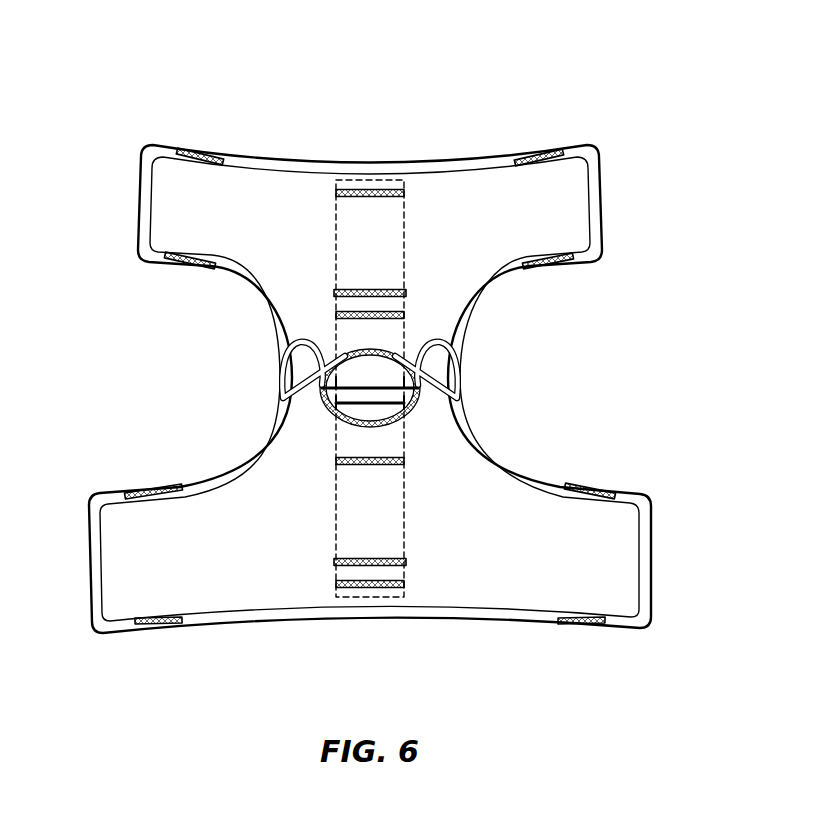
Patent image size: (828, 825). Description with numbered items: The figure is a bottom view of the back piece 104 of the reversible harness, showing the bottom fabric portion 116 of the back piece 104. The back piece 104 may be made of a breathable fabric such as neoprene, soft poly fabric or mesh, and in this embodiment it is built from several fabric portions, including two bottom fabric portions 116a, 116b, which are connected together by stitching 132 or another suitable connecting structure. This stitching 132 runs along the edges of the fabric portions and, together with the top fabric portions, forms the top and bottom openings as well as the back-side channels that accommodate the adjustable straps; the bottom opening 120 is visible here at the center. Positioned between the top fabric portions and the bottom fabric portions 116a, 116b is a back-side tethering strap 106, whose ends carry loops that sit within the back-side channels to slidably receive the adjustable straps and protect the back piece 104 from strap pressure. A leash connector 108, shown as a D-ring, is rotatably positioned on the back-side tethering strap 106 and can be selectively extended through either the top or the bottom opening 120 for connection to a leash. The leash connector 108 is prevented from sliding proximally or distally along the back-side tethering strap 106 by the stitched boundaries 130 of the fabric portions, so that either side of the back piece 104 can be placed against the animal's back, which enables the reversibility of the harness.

The back piece 104 is at (505, 83).
The back-side tethering strap 106 is at (386, 370).
The leash connector 108 is at (386, 396).
The bottom fabric portions 116 is at (242, 582).
The bottom fabric portion 116a is at (445, 267).
The bottom fabric portion 116b is at (470, 490).
The bottom opening 120 is at (328, 386).
The stitched boundaries 130 is at (432, 392).
The stitching 132 is at (202, 156).